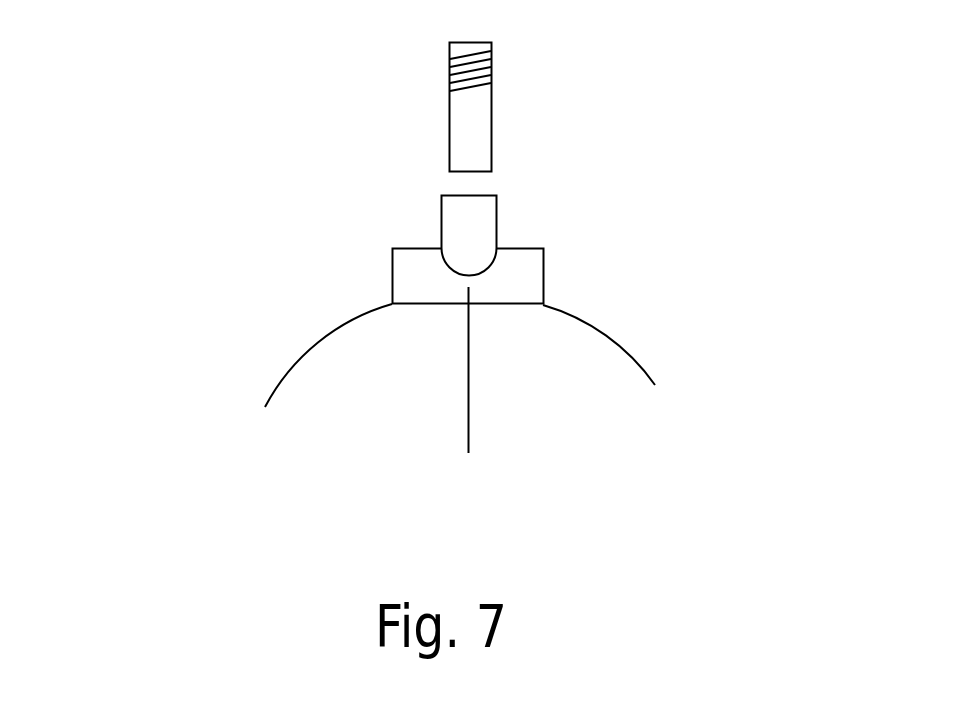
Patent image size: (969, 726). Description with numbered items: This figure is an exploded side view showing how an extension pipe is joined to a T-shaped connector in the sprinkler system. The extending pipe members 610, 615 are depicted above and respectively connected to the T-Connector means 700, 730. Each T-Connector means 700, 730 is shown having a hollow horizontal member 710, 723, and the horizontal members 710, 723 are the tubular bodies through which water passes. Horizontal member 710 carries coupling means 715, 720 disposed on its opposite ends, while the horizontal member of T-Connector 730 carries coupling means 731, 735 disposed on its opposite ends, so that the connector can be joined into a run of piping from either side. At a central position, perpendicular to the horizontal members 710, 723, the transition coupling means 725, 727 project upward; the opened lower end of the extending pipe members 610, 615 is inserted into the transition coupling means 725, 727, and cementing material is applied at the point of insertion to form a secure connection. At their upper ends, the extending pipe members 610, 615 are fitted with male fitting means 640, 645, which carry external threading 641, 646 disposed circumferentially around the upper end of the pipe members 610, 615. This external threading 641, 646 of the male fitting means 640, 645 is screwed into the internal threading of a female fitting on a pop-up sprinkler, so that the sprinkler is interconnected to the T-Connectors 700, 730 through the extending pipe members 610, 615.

The extending pipe member 610 is at (458, 95).
The extending pipe member 615 is at (458, 95).
The male fitting means 640 is at (264, 107).
The male fitting means 645 is at (450, 81).
The external threading 641 is at (265, 54).
The external threading 646 is at (265, 54).
The transition coupling means 725 is at (670, 236).
The transition coupling means 727 is at (497, 223).
The T-Connector means 700 is at (638, 279).
The T-Connector means 730 is at (582, 283).
The hollow horizontal member 710 is at (487, 399).
The hollow horizontal member 723 is at (487, 399).
The coupling means 720 is at (212, 369).
The coupling means 731 is at (212, 369).
The coupling means 715 is at (715, 373).
The coupling means 735 is at (715, 373).